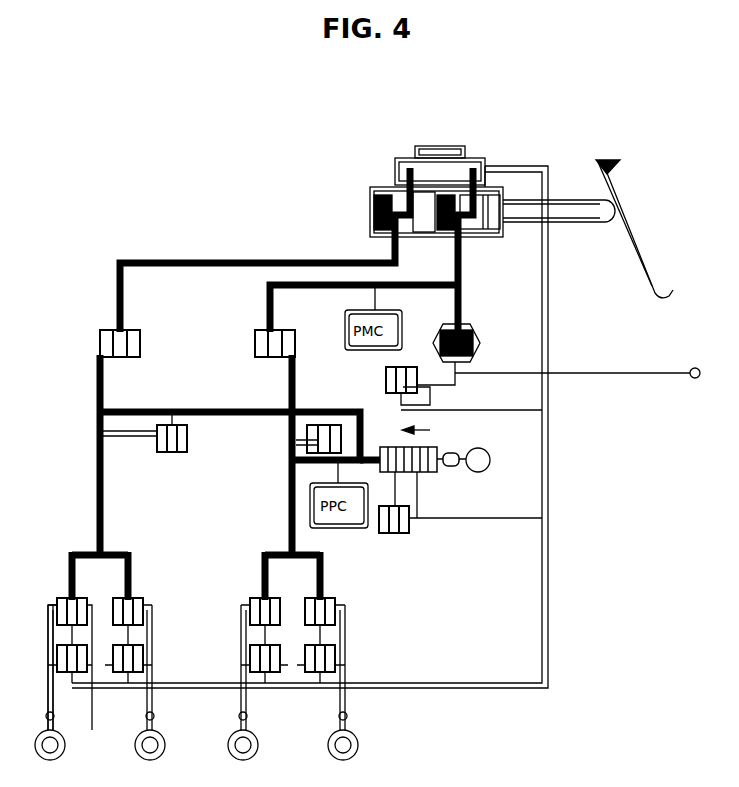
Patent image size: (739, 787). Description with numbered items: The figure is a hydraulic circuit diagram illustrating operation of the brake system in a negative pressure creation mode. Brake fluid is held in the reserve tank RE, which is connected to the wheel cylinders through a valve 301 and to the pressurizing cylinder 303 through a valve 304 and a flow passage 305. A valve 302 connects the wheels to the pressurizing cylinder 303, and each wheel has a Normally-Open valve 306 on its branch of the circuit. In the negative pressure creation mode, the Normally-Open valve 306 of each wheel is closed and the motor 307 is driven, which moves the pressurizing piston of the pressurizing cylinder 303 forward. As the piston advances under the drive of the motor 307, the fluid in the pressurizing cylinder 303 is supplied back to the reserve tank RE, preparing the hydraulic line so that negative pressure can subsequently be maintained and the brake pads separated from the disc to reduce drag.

The reserve tank RE is at (466, 152).
The valve 301 is at (122, 331).
The valve 302 is at (171, 455).
The pressurizing cylinder 303 is at (385, 395).
The valve 304 is at (396, 535).
The flow passage 305 is at (440, 475).
The Normally-Open valve 306 is at (60, 598).
The motor 307 is at (490, 469).